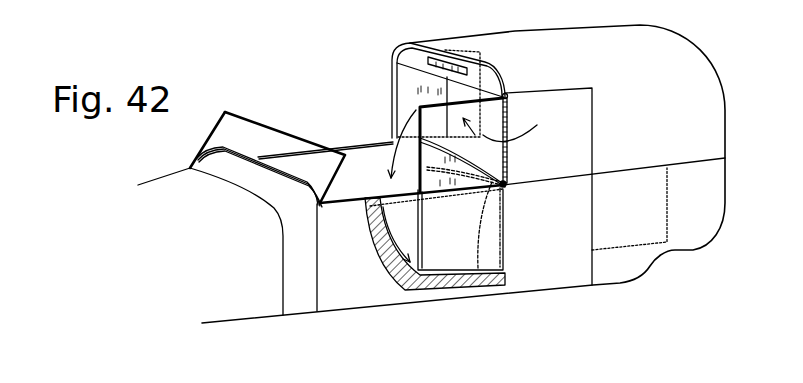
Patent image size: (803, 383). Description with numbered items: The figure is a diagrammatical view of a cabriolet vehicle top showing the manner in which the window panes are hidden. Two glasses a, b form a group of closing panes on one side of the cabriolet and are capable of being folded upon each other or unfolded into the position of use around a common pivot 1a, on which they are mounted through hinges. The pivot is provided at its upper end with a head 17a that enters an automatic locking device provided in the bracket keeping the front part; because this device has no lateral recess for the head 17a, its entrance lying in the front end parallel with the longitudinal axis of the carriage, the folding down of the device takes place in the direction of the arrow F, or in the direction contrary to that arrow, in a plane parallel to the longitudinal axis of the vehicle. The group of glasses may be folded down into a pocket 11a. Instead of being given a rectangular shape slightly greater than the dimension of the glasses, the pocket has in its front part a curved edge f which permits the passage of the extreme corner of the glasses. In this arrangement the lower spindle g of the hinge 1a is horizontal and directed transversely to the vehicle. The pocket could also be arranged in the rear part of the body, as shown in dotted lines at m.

The glass a is at (465, 49).
The glass b is at (398, 106).
The head 17a is at (507, 92).
The common pivot 1a is at (509, 162).
The arrow F is at (390, 144).
The lower spindle g is at (505, 187).
The curved edge f is at (393, 267).
The pocket 11a is at (442, 260).
The pocket in rear part of body m is at (628, 180).